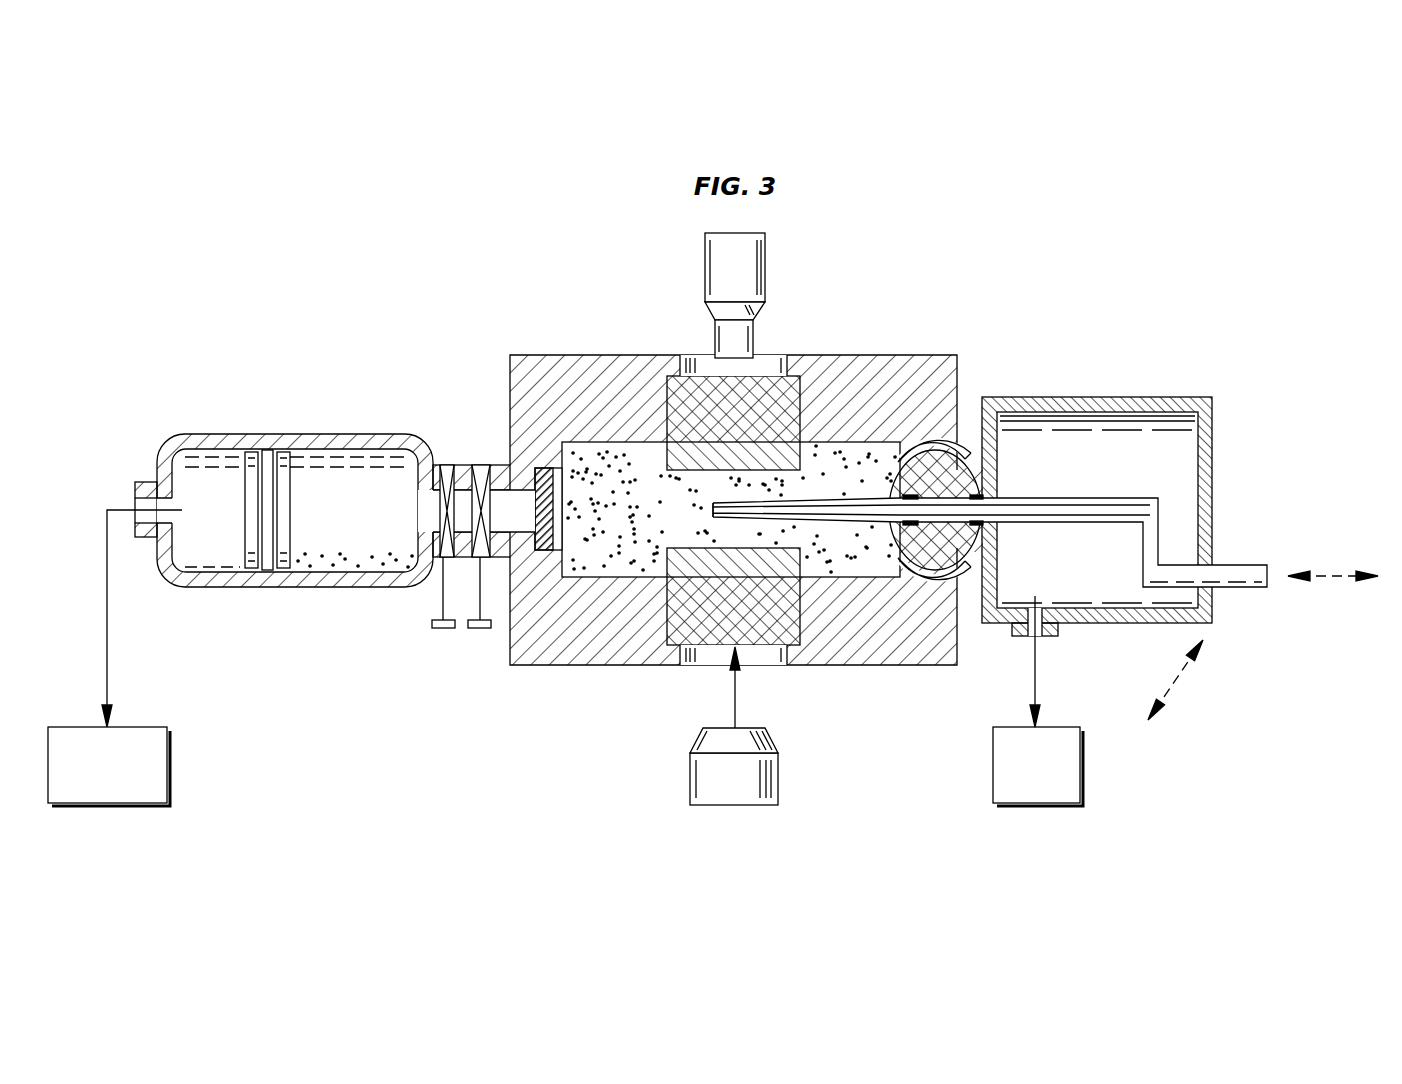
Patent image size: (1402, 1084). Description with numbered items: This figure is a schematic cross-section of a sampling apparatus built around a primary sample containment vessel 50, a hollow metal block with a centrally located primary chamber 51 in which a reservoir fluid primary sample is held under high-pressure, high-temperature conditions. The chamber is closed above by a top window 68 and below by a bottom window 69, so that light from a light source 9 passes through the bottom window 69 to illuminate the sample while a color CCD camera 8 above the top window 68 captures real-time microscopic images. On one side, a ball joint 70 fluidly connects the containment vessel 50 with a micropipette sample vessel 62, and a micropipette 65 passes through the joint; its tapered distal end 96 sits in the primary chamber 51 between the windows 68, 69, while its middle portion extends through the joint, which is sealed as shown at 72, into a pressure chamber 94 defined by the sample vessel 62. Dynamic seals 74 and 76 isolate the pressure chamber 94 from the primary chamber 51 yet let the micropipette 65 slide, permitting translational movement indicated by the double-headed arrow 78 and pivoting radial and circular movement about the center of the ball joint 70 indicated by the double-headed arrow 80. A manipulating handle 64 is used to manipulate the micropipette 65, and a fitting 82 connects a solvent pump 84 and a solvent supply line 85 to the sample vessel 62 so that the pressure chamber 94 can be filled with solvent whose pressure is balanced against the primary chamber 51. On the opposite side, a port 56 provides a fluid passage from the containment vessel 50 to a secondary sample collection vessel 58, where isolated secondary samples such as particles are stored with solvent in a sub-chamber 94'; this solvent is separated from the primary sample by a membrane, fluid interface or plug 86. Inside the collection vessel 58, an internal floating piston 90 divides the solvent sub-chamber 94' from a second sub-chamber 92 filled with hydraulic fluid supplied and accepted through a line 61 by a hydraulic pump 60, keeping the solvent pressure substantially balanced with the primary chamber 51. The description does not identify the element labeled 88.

The color CCD camera 8 is at (742, 279).
The light source 9 is at (742, 794).
The primary sample containment vessel 50 is at (538, 355).
The primary chamber 51 is at (847, 458).
The port 56 is at (464, 465).
The secondary sample collection vessel 58 is at (303, 434).
The hydraulic pump 60 is at (92, 779).
The line 61 is at (107, 600).
The micropipette sample vessel 62 is at (1157, 397).
The manipulating handle 64 is at (1247, 565).
The micropipette 65 is at (1052, 497).
The top window 68 is at (719, 434).
The bottom window 69 is at (721, 609).
The ball joint 70 is at (916, 447).
The seal 72 is at (931, 443).
The dynamic seal 74 is at (918, 572).
The dynamic seal 76 is at (975, 545).
The double-headed arrow 78 is at (1340, 565).
The double-headed arrow 80 is at (1182, 683).
The fitting 82 is at (1050, 636).
The solvent pump 84 is at (1021, 779).
The solvent supply line 85 is at (1038, 680).
The plug 86 is at (545, 552).
The sensors 88 is at (443, 628).
The internal floating piston 90 is at (267, 568).
The sub-chamber 92 is at (205, 478).
The pressure chamber 94 is at (1097, 509).
The sub-chamber 94' is at (298, 529).
The distal end 96 is at (703, 490).